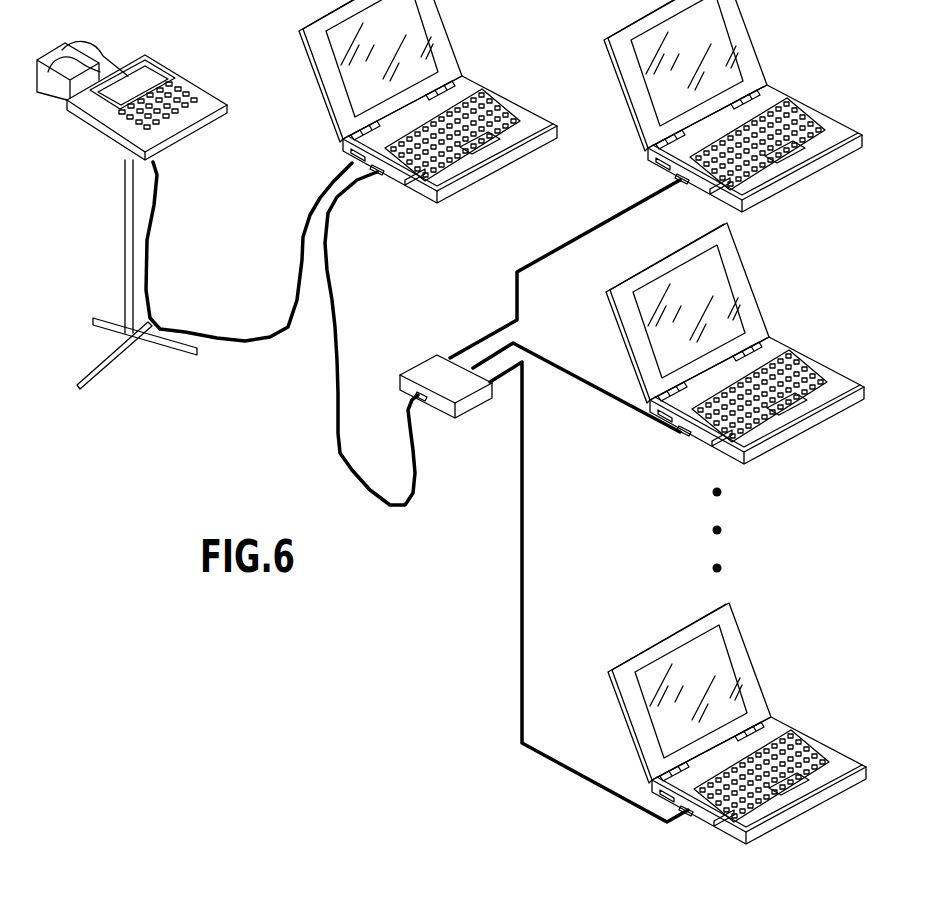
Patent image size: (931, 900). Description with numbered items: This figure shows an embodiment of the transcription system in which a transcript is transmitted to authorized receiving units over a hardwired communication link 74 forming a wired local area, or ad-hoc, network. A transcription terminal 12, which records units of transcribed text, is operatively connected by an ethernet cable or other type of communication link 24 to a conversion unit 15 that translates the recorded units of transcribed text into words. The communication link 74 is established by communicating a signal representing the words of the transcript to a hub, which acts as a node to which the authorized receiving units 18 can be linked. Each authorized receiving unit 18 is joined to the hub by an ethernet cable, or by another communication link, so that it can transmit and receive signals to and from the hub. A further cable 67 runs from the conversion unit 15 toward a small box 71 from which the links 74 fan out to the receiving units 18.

The transcription terminal 12 is at (207, 92).
The conversion unit 15 is at (317, 77).
The authorized receiving unit 18 is at (814, 171).
The communication link 24 is at (270, 333).
The interface cable 67 is at (336, 317).
The network interface box 71 is at (441, 368).
The communication link 74 is at (580, 237).